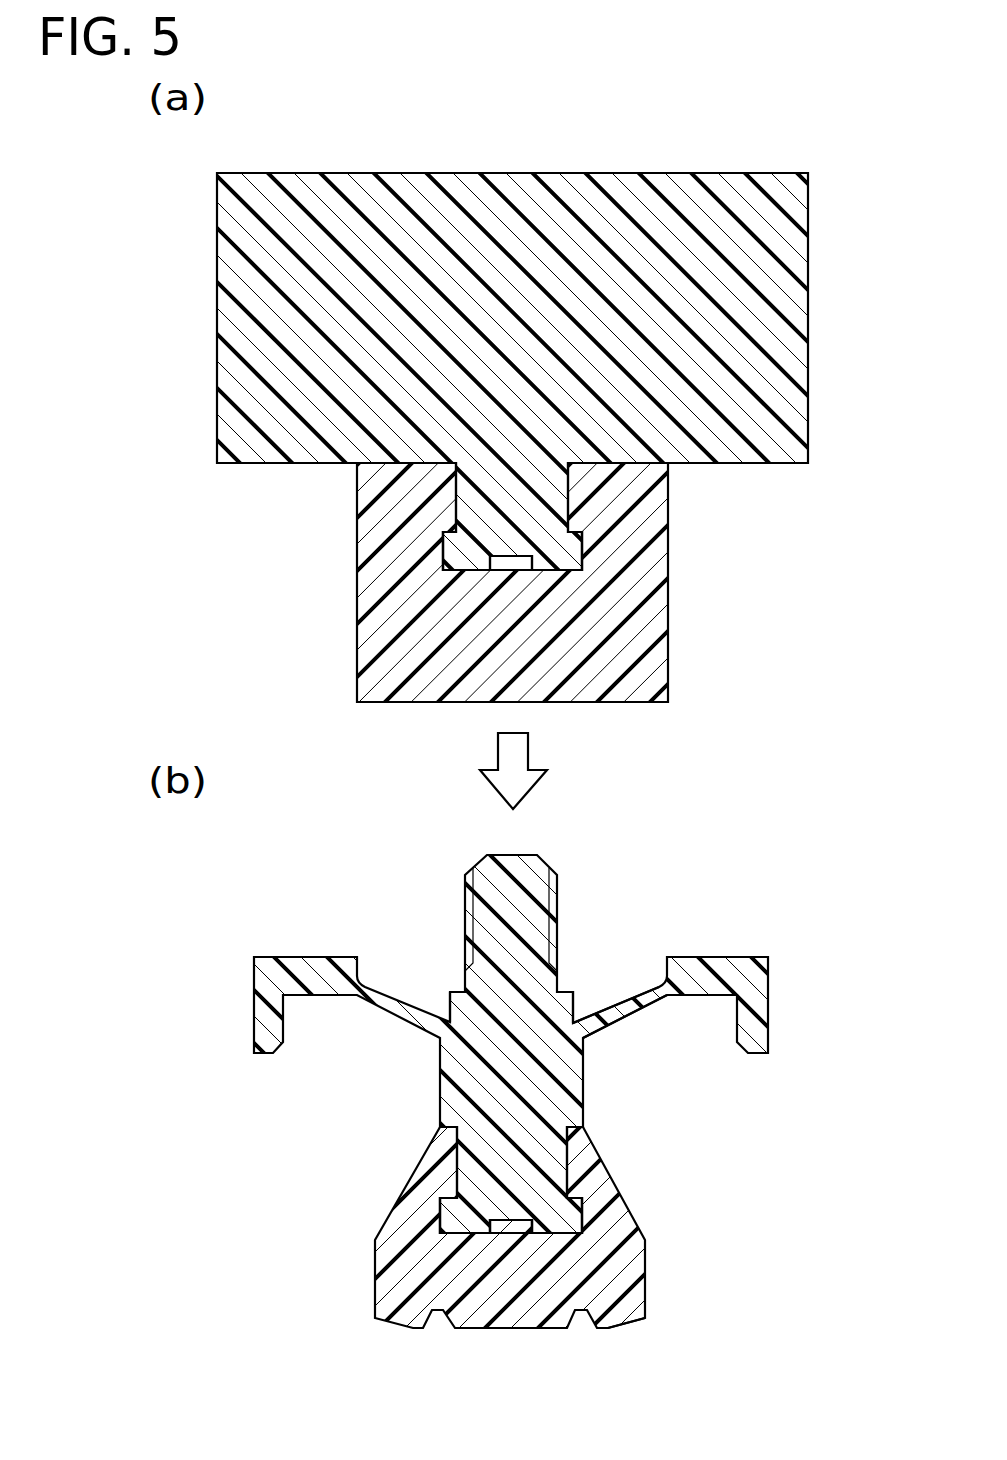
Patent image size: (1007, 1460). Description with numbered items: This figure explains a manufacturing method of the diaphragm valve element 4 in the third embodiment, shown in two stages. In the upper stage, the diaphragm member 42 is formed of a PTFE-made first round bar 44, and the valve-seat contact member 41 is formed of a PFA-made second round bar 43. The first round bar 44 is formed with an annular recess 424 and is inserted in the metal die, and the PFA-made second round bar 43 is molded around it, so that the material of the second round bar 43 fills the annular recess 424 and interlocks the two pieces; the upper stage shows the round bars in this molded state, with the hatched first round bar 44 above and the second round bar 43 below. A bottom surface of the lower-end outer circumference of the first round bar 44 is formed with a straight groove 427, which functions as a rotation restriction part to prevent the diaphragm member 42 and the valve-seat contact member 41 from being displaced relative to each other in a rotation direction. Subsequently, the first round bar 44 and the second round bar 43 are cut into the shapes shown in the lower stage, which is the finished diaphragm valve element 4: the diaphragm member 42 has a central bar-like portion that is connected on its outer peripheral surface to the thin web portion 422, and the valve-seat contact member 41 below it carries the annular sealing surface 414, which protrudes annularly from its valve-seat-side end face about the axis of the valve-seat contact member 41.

The diaphragm valve element 4 is at (511, 906).
The valve-seat contact member 41 is at (523, 1154).
The annular sealing surface 414 is at (622, 1329).
The diaphragm member 42 is at (563, 1007).
The web portion 422 is at (627, 1019).
The annular recess 424 is at (569, 501).
The straight groove 427 is at (497, 560).
The second round bar 43 is at (657, 650).
The first round bar 44 is at (686, 186).